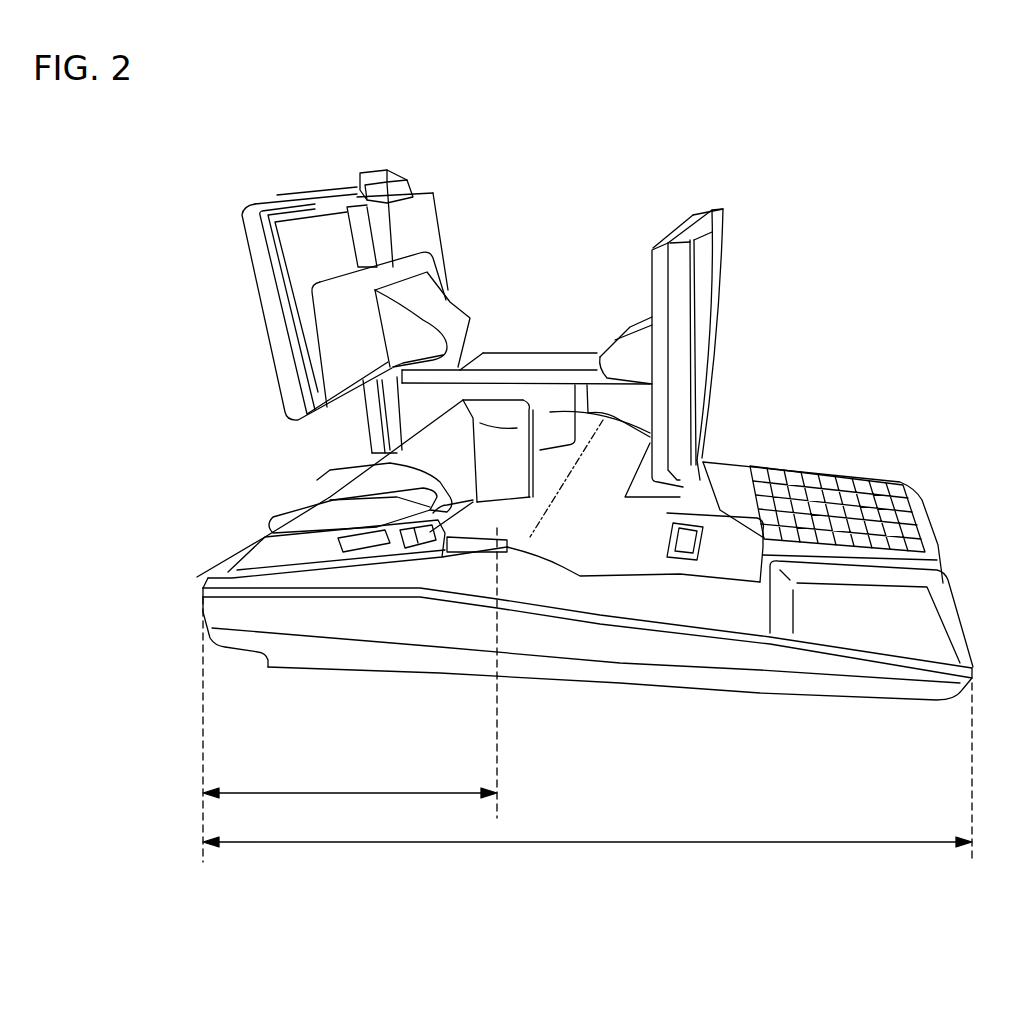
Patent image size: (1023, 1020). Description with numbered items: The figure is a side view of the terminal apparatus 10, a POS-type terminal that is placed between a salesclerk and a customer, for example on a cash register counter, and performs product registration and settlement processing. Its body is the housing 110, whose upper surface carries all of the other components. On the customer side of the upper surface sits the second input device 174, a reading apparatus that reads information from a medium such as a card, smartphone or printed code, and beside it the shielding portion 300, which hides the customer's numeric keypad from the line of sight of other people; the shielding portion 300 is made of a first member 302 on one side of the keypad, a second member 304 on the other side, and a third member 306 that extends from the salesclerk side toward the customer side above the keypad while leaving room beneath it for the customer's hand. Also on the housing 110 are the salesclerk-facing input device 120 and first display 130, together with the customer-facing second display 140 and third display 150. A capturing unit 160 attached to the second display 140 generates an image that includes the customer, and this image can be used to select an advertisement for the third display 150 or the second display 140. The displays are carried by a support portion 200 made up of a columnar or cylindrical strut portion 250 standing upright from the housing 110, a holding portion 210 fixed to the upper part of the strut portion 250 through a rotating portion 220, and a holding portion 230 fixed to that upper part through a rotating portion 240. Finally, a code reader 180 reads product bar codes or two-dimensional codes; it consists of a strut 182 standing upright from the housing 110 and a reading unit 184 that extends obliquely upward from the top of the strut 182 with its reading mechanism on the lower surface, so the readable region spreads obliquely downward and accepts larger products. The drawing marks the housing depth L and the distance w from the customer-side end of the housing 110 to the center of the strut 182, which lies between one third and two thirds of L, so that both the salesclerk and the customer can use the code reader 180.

The terminal apparatus 10 is at (878, 80).
The housing 110 is at (690, 650).
The input device 120 is at (856, 490).
The first display 130 is at (712, 238).
The second display 140 is at (358, 197).
The third display 150 is at (270, 202).
The capturing unit 160 is at (392, 178).
The second input device 174 is at (197, 577).
The code reader 180 is at (650, 750).
The strut 182 is at (490, 425).
The reading unit 184 is at (538, 492).
The support portion 200 is at (735, 122).
The holding portion 210 is at (665, 243).
The rotating portion 220 is at (630, 347).
The holding portion 230 is at (380, 277).
The rotating portion 240 is at (460, 317).
The strut portion 250 is at (538, 407).
The shielding portion 300 is at (147, 407).
The first member 302 is at (305, 518).
The second member 304 is at (340, 488).
The third member 306 is at (440, 480).